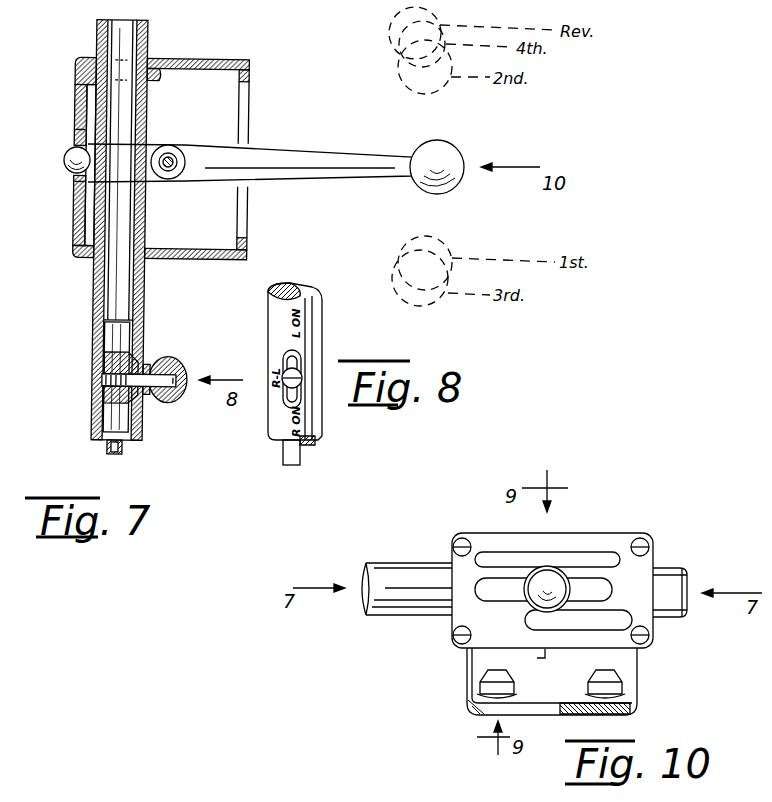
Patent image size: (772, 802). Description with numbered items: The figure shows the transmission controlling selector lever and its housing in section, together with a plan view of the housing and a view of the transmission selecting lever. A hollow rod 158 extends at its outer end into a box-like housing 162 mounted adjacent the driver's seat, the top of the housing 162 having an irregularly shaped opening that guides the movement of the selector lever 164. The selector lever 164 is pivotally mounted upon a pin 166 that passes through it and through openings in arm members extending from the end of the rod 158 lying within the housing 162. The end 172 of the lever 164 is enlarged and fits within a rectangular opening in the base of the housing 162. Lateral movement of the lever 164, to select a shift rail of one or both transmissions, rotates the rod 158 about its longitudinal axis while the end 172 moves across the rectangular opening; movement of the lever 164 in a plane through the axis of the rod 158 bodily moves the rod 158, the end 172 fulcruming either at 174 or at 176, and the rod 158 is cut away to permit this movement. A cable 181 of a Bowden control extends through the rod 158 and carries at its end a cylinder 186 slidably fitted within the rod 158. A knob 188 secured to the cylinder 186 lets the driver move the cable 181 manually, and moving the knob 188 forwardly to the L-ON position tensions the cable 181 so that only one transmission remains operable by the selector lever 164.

In FIG. 7, the hollow rod 158 is at (146, 292).
In FIG. 7, the housing 162 is at (206, 58).
In FIG. 10, the housing 162 is at (460, 615).
In FIG. 7, the selector lever 164 is at (310, 162).
In FIG. 10, the selector lever 164 is at (547, 578).
In FIG. 7, the pin 166 is at (172, 158).
In FIG. 7, the end of the lever member 172 is at (66, 156).
In FIG. 7, the fulcrum point 174 is at (74, 182).
In FIG. 7, the fulcrum point 176 is at (76, 131).
In FIG. 7, the cable 181 is at (124, 447).
In FIG. 8, the cable 181 is at (300, 452).
In FIG. 7, the cylinder 186 is at (110, 404).
In FIG. 7, the knob 188 is at (170, 402).